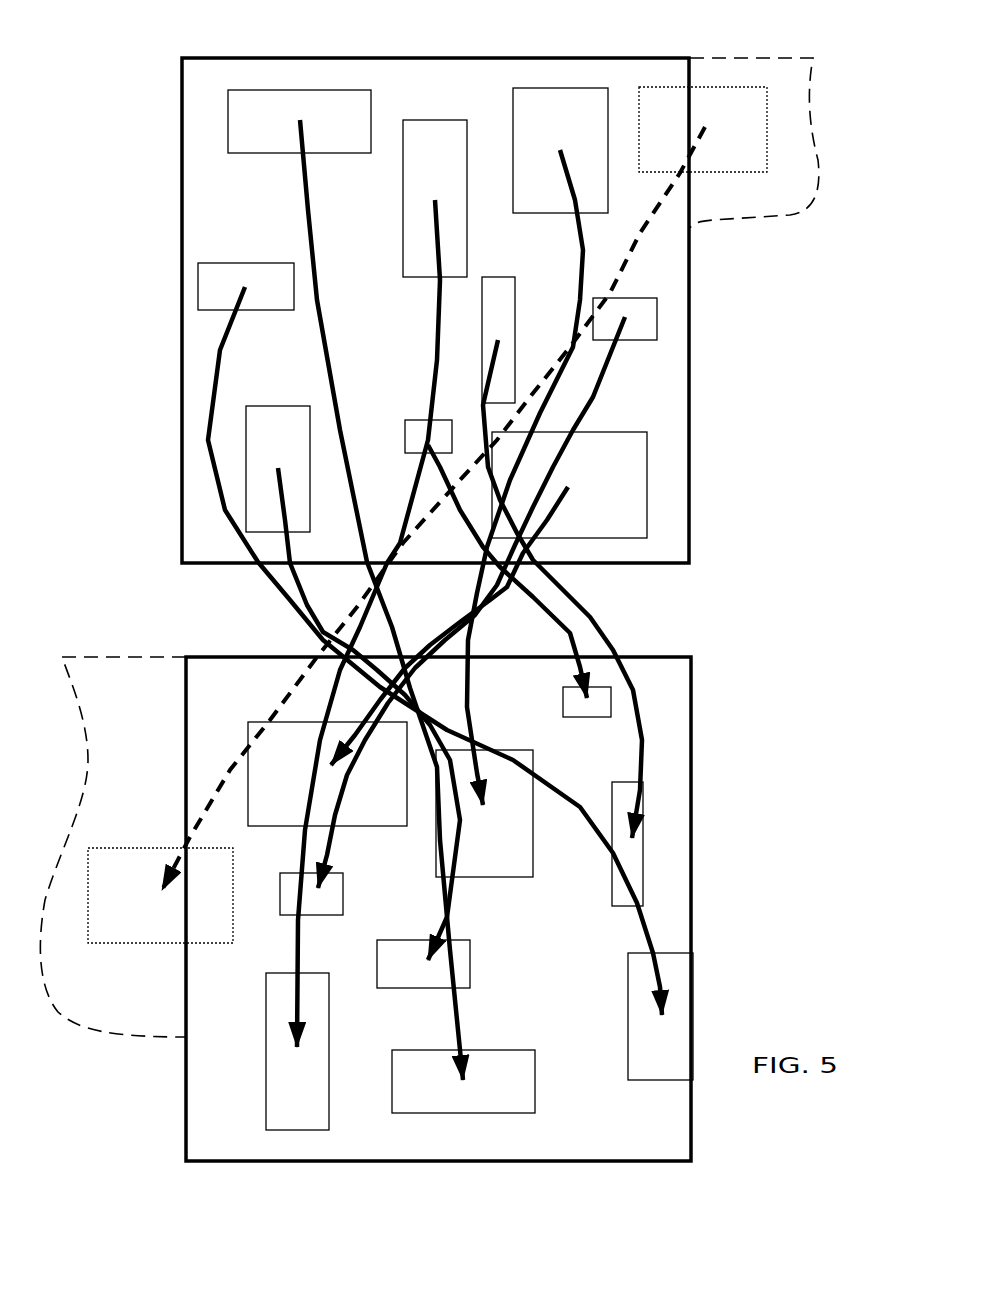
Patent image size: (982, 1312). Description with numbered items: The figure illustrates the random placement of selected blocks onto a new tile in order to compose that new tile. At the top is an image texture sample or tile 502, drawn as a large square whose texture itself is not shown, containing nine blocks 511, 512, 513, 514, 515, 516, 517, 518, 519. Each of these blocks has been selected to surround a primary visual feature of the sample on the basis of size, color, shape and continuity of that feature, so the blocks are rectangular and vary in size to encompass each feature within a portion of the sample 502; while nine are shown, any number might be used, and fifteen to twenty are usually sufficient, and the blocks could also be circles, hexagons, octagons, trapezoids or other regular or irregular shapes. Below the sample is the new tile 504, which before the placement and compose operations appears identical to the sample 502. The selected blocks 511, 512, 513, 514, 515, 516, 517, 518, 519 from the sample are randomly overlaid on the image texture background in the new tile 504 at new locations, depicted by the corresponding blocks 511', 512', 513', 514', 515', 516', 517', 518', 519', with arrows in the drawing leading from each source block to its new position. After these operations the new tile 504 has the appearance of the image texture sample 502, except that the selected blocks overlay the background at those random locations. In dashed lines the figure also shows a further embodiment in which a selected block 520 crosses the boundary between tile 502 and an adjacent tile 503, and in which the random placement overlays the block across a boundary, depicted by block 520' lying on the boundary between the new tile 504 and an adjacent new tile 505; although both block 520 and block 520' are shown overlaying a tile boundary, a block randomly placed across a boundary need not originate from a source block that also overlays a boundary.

The image texture sample or tile 502 is at (690, 415).
The tile 503 is at (752, 54).
The new tile 504 is at (693, 903).
The new tile 505 is at (122, 657).
The block 511 is at (345, 545).
The block 512 is at (402, 556).
The block 513 is at (562, 407).
The block 514 is at (430, 612).
The block 515 is at (561, 530).
The block 516 is at (499, 564).
The block 517 is at (346, 654).
The block 518 is at (467, 539).
The block 519 is at (507, 570).
The block 520 is at (526, 488).
The selected block at new location 511' is at (463, 1062).
The selected block at new location 512' is at (336, 1051).
The selected block at new location 513' is at (491, 786).
The selected block at new location 514' is at (464, 944).
The selected block at new location 515' is at (589, 876).
The selected block at new location 516' is at (351, 894).
The selected block at new location 517' is at (626, 1018).
The selected block at new location 518' is at (599, 727).
The selected block at new location 519' is at (304, 746).
The block overlaid on tile boundary 520' is at (147, 955).